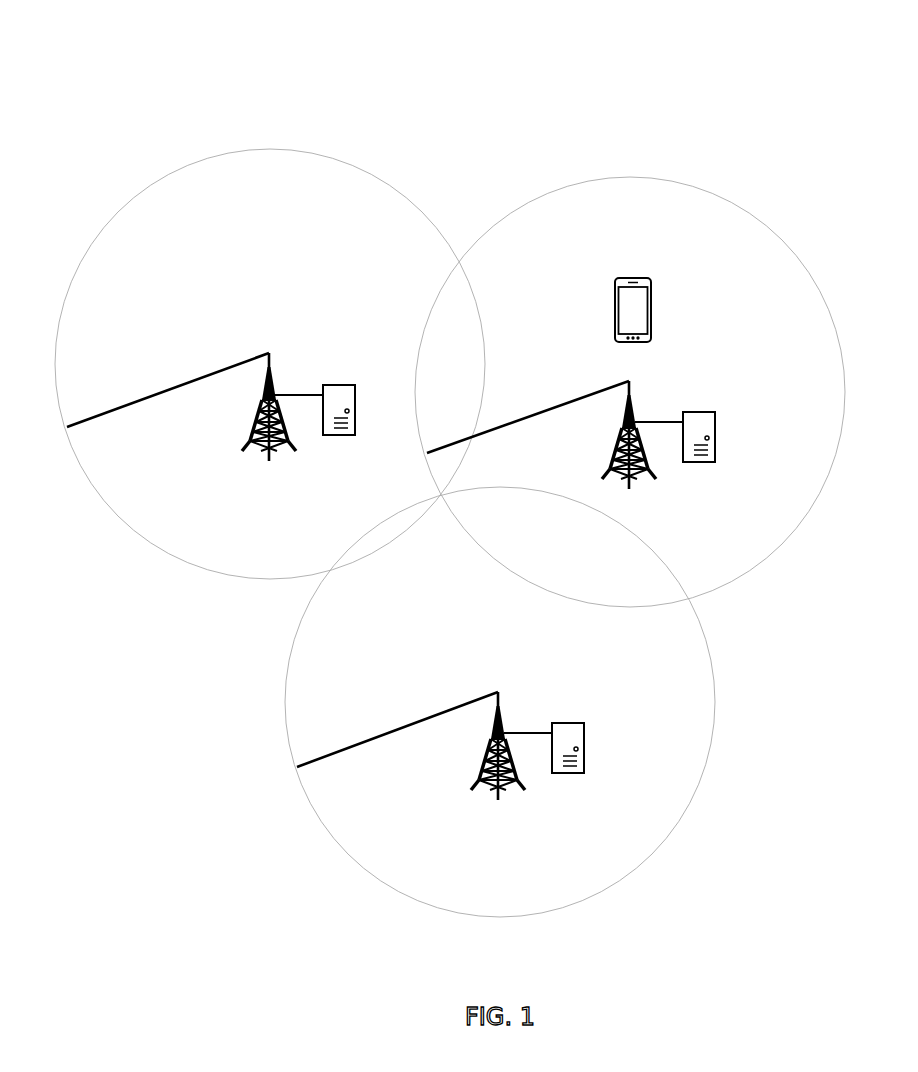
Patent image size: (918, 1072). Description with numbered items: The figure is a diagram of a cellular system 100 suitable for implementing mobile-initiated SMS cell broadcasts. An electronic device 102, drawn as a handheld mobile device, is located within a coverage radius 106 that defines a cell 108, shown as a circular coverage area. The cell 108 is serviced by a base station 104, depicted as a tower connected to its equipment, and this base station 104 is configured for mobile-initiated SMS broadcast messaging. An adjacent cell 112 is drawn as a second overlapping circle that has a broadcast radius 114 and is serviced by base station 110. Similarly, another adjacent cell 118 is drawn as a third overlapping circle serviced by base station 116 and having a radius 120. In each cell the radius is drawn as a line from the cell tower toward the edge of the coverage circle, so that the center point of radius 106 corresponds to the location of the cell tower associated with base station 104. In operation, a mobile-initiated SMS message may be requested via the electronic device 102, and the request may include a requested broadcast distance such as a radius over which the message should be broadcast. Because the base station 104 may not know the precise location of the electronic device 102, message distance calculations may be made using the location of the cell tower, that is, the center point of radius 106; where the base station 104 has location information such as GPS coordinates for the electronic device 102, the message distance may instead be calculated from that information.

The cellular system 100 is at (422, 50).
The electronic device 102 is at (653, 297).
The base station 104 is at (715, 421).
The coverage radius 106 is at (585, 402).
The cell 108 is at (540, 196).
The base station 110 is at (584, 732).
The adjacent cell 112 is at (697, 621).
The broadcast radius 114 is at (453, 712).
The base station 116 is at (355, 394).
The adjacent cell 118 is at (147, 188).
The radius 120 is at (224, 373).